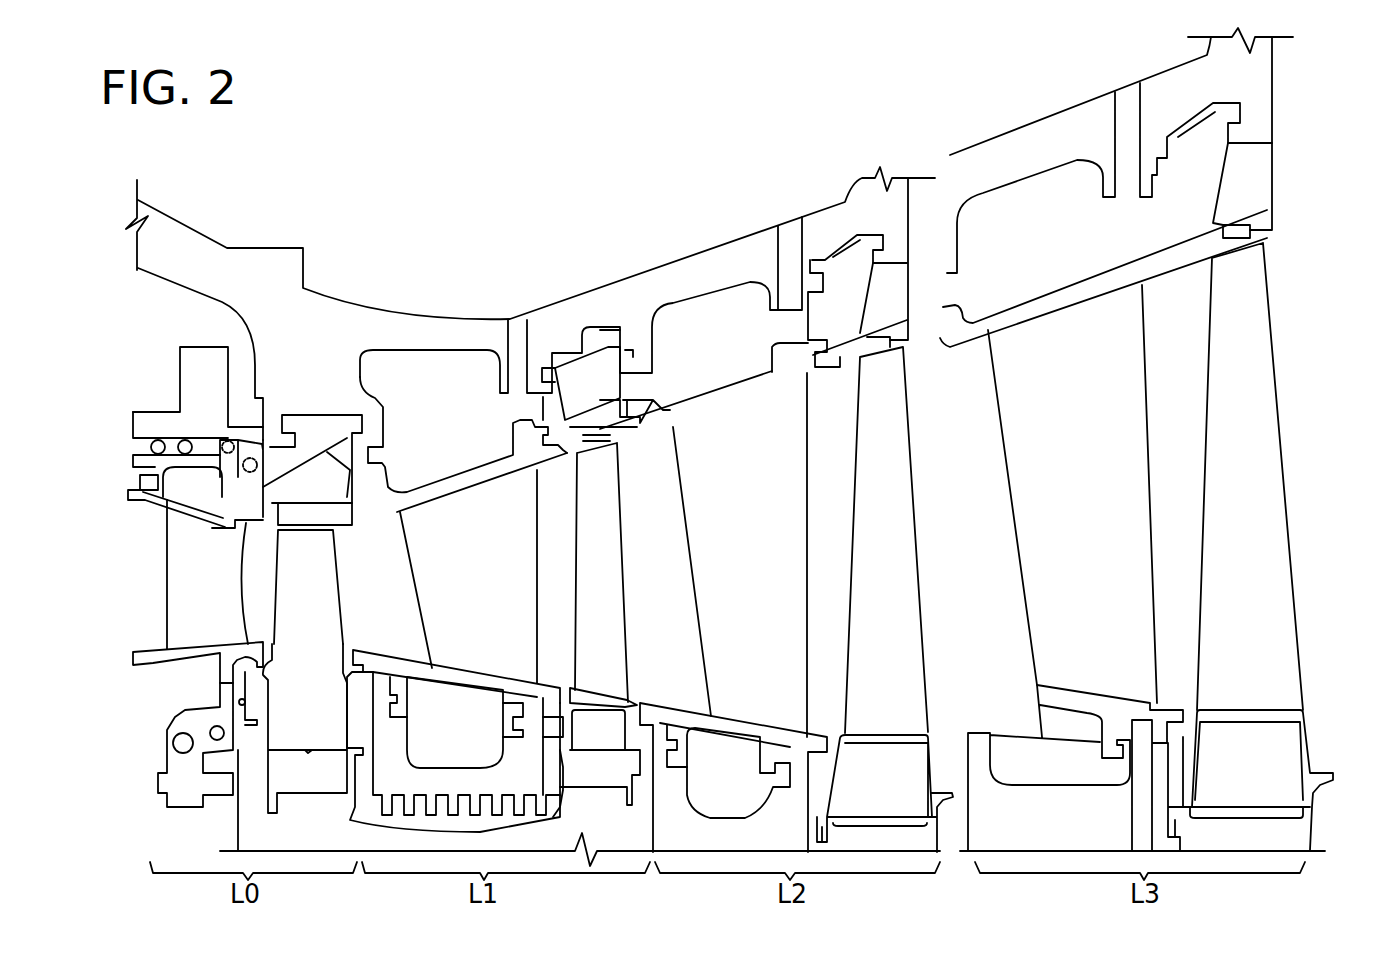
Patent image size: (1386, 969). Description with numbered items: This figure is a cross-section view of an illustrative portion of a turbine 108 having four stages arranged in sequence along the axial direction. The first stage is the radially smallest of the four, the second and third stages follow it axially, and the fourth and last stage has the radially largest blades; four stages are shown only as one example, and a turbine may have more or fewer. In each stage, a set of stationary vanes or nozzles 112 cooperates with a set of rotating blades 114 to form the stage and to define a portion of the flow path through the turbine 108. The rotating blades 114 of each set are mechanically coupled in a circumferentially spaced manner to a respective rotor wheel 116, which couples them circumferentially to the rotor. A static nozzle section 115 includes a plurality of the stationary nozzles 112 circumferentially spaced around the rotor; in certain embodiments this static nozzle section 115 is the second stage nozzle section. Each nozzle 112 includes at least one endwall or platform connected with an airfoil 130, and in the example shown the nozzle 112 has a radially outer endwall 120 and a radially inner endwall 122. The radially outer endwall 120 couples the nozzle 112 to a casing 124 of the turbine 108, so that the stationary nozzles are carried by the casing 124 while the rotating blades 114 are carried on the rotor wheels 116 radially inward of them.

The turbine 108 is at (430, 290).
The stationary vanes or nozzles 112 is at (662, 511).
The rotating blades 114 is at (788, 488).
The static nozzle section 115 is at (710, 370).
The rotor wheel 116 is at (1293, 832).
The radially outer endwall 120 is at (457, 499).
The radially inner endwall 122 is at (517, 680).
The casing 124 is at (467, 337).
The airfoil 130 is at (705, 445).